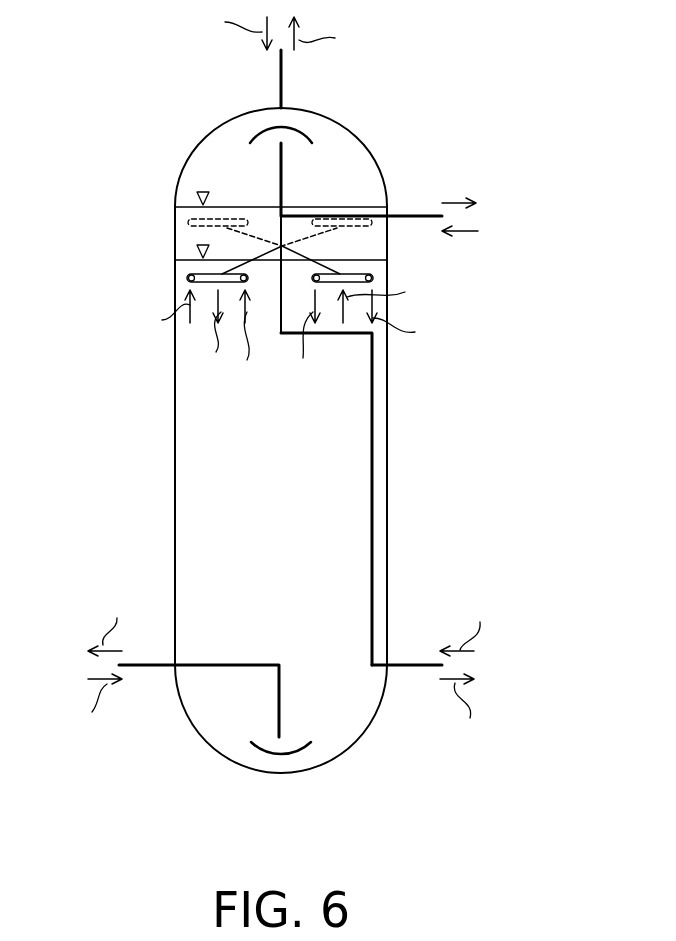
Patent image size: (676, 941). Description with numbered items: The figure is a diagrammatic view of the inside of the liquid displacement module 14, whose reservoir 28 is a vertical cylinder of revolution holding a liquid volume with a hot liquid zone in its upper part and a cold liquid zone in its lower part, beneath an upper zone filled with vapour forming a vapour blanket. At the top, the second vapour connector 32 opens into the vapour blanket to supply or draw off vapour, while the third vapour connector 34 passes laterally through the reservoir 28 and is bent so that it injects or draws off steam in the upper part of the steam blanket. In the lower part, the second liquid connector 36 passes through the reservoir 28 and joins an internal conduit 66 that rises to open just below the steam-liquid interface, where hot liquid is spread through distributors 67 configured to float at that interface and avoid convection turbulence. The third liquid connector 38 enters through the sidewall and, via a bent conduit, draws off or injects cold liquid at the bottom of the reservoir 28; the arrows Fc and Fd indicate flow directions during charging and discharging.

The liquid displacement module 14 is at (410, 443).
The reservoir 28 is at (175, 466).
The second vapour connector 32 is at (280, 107).
The third vapour connector 34 is at (390, 217).
The second liquid connector 36 is at (398, 662).
The third liquid connector 38 is at (283, 713).
The conduit 66 is at (373, 517).
The distributors 67 is at (187, 278).